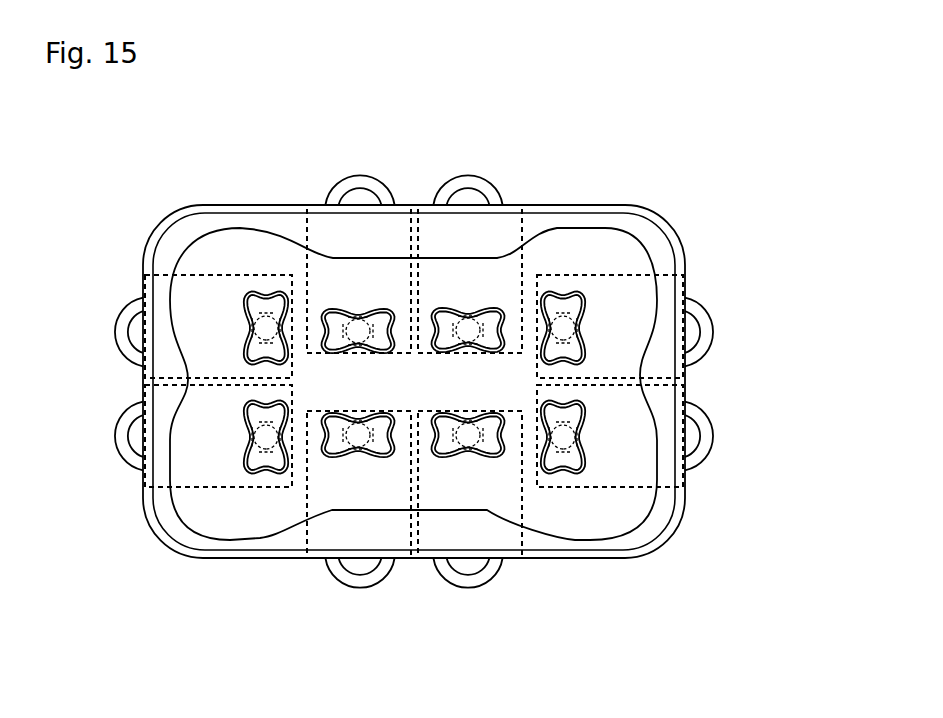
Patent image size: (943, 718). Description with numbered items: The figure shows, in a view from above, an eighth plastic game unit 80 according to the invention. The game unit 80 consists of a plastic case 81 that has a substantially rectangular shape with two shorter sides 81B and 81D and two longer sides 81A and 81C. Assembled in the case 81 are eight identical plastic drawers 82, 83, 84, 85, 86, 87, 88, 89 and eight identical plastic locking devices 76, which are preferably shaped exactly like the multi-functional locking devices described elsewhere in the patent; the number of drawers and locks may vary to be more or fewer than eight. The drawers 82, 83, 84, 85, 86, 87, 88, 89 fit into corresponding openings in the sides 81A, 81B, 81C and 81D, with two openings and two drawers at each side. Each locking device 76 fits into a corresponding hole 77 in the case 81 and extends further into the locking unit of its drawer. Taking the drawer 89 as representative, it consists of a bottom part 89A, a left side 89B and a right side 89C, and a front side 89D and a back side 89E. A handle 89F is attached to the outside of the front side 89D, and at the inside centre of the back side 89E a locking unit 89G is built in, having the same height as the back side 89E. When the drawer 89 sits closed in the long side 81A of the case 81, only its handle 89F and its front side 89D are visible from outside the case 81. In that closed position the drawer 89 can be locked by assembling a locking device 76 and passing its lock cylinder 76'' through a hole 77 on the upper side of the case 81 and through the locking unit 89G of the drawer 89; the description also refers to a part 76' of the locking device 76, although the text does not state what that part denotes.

The locking device 76 is at (404, 369).
The contact pad outer rim 76' is at (165, 276).
The lock cylinder 76'' is at (166, 286).
The hole 77 is at (257, 345).
The eighth plastic game unit 80 is at (664, 578).
The plastic case 81 is at (528, 227).
The longer side 81A is at (527, 205).
The shorter side 81B is at (685, 280).
The longer side 81C is at (190, 559).
The shorter side 81D is at (143, 490).
The plastic drawer 82 is at (492, 197).
The plastic drawer 83 is at (697, 347).
The plastic drawer 84 is at (698, 457).
The plastic drawer 85 is at (445, 565).
The plastic drawer 86 is at (340, 573).
The plastic drawer 87 is at (135, 458).
The plastic drawer 88 is at (137, 362).
The drawer 89 is at (340, 195).
The bottom part 89A is at (358, 282).
The left side 89B is at (302, 272).
The right side 89C is at (412, 272).
The front side 89D is at (315, 213).
The back side 89E is at (332, 313).
The handle 89F is at (383, 195).
The locking unit 89G is at (396, 305).